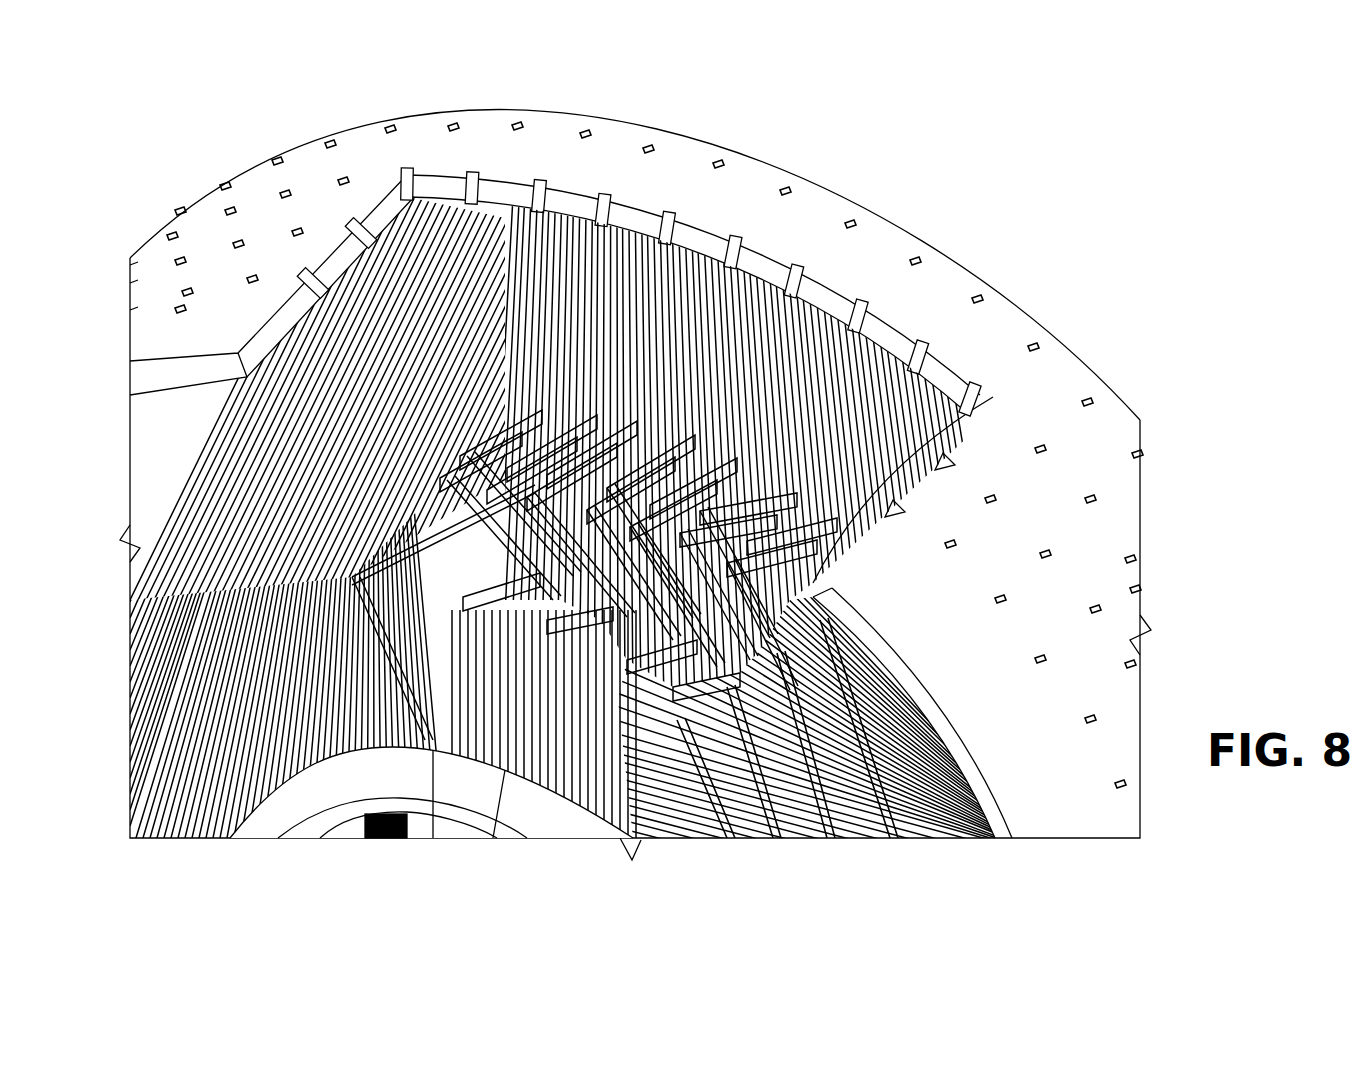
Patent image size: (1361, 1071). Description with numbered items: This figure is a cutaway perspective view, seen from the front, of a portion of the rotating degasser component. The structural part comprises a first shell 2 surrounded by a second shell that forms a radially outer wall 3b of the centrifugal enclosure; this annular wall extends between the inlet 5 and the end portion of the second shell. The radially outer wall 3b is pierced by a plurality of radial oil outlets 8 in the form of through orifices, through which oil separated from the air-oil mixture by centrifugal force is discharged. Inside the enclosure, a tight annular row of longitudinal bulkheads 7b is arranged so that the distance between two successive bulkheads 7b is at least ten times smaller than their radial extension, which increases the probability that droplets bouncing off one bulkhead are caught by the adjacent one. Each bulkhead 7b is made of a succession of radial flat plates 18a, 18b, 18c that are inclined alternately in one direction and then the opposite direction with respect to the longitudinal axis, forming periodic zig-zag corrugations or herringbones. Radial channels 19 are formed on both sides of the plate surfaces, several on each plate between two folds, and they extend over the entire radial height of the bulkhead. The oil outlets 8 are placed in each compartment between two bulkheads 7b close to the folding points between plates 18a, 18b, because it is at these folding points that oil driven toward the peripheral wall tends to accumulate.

The first shell 2 is at (343, 788).
The radially outer wall 3b is at (815, 215).
The inlet 5 is at (104, 446).
The longitudinal bulkhead 7b is at (855, 395).
The radial oil outlet 8 is at (276, 158).
The radial flat plate 18a is at (662, 740).
The radial flat plate 18b is at (740, 690).
The radial flat plate 18c is at (790, 700).
The radial channel 19 is at (433, 838).